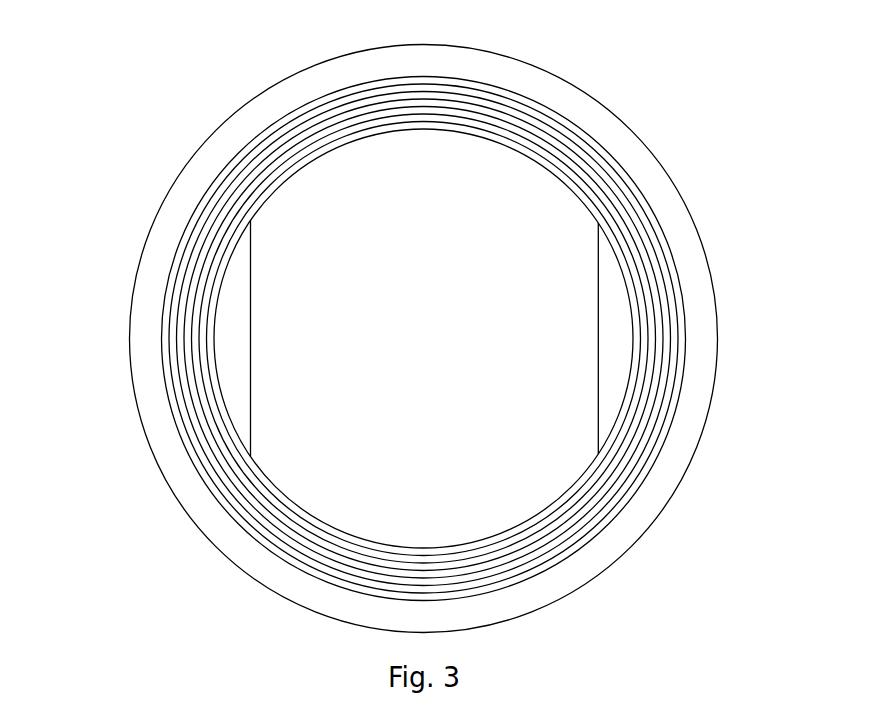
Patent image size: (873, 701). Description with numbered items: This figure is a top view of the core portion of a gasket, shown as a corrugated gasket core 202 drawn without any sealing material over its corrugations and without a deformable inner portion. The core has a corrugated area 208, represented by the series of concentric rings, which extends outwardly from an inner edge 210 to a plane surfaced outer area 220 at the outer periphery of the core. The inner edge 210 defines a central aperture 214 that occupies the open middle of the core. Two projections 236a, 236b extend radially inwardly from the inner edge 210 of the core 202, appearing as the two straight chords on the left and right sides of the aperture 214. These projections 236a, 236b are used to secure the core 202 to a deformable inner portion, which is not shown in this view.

The corrugated gasket core 202 is at (167, 120).
The corrugated area 208 is at (605, 160).
The inner edge 210 is at (530, 155).
The aperture 214 is at (442, 342).
The plane surfaced outer area 220 is at (700, 248).
The projection 236a is at (240, 298).
The projection 236b is at (622, 354).